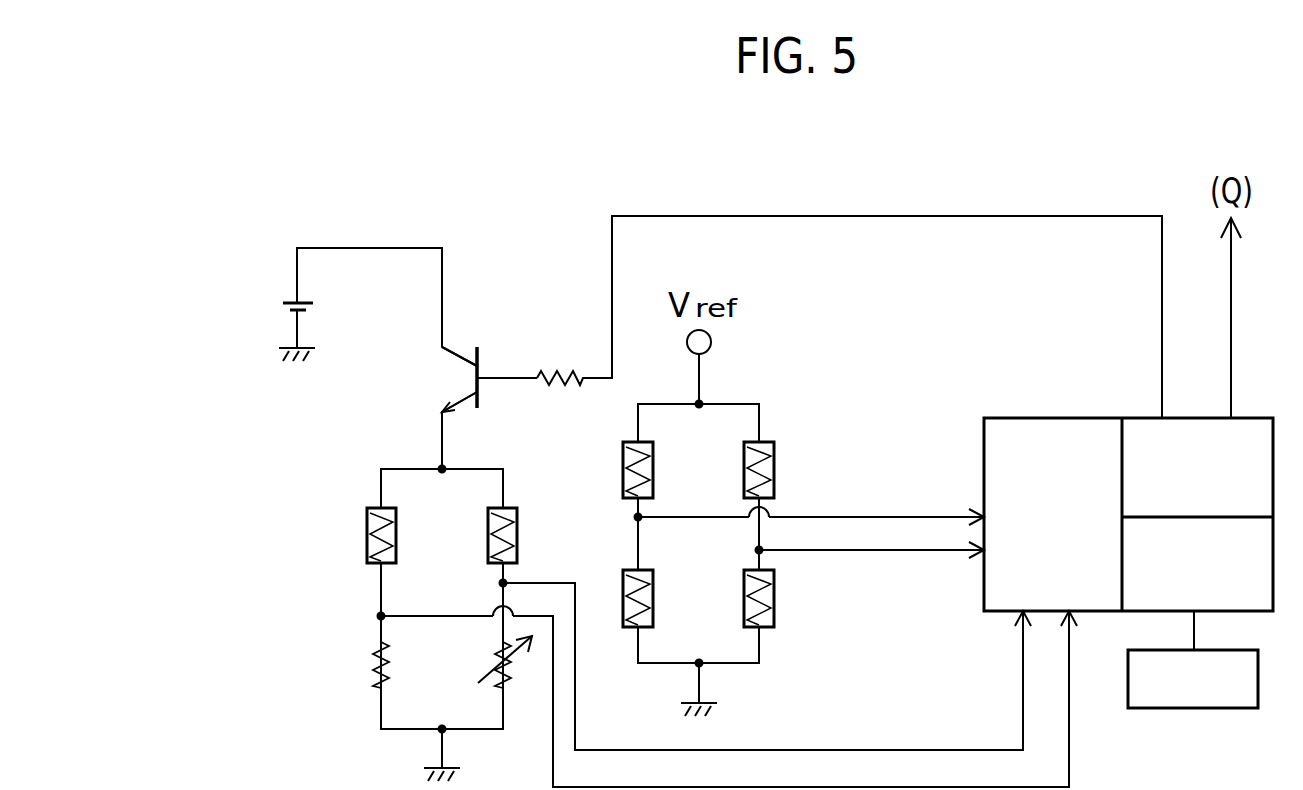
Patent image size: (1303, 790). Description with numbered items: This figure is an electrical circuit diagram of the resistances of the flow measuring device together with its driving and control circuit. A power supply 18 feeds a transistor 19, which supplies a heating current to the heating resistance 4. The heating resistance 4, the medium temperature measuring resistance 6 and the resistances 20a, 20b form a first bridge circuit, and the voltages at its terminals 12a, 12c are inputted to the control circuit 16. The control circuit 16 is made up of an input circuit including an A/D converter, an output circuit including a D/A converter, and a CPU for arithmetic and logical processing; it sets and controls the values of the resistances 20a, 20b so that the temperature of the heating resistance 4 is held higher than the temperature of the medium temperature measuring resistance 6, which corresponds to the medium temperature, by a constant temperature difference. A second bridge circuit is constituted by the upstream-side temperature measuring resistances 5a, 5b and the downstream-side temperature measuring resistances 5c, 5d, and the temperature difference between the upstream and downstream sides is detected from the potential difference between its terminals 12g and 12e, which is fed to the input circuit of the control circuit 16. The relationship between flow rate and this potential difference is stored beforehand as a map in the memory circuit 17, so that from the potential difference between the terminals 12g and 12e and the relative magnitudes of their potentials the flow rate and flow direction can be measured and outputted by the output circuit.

The power supply 18 is at (283, 308).
The transistor 19 is at (477, 352).
The heating resistance 4 is at (366, 535).
The medium temperature measuring resistance 6 is at (518, 535).
The terminal 12a is at (501, 583).
The terminal 12c is at (379, 616).
The terminal 12g is at (635, 516).
The terminal 12e is at (762, 552).
The resistance 20a is at (370, 670).
The resistance 20b is at (521, 692).
The upstream-side temperature measuring resistance 5a is at (623, 460).
The upstream-side temperature measuring resistance 5b is at (775, 612).
The downstream-side temperature measuring resistance 5c is at (654, 593).
The downstream-side temperature measuring resistance 5d is at (774, 475).
The control circuit 16 is at (1073, 418).
The memory circuit 17 is at (1192, 710).